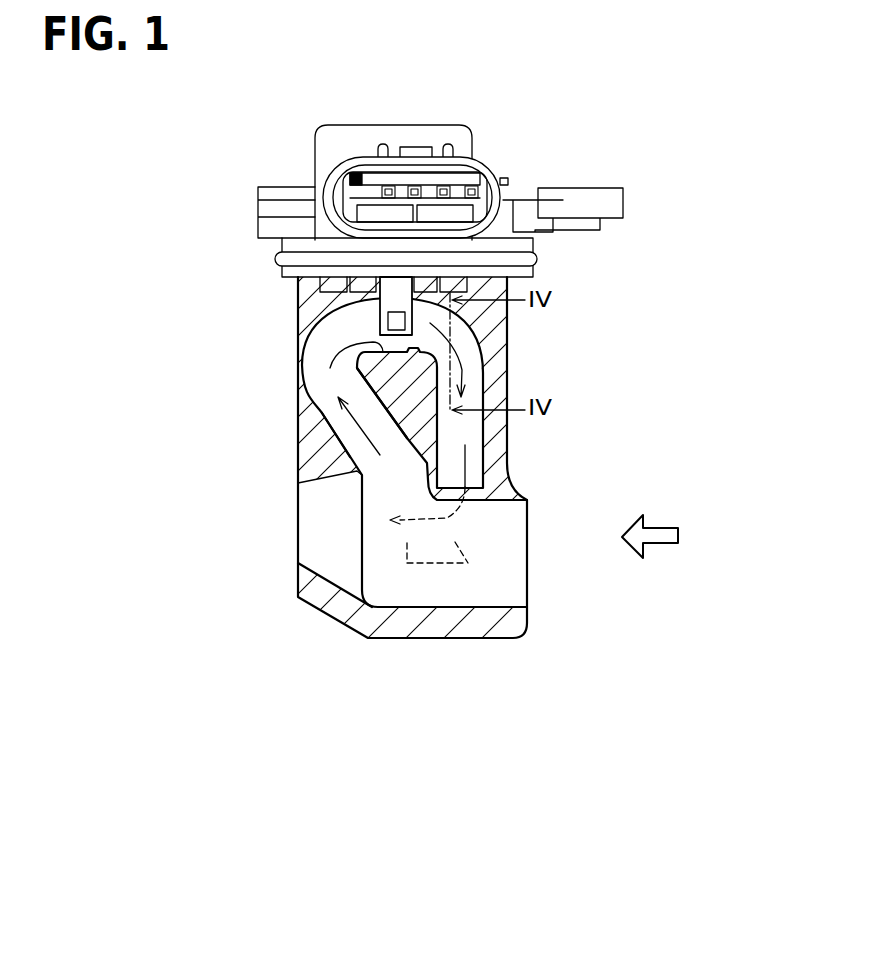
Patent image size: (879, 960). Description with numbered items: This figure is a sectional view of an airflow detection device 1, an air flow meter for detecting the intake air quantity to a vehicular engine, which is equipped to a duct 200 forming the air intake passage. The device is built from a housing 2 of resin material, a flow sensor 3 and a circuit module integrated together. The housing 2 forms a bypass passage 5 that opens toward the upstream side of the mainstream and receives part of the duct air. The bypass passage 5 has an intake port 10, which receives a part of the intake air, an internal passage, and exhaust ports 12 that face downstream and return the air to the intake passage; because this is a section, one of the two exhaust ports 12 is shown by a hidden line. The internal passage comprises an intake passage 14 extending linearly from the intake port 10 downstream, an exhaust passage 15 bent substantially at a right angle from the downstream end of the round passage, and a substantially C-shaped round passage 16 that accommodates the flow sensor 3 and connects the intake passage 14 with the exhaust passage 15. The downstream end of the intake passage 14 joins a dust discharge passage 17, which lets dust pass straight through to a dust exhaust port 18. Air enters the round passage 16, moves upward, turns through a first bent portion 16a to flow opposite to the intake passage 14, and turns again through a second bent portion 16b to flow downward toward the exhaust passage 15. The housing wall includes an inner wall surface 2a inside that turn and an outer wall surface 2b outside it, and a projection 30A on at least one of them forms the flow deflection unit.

The airflow detection device 1 is at (621, 100).
The housing 2 is at (502, 353).
The inner wall surface 2a is at (312, 396).
The outer wall surface 2b is at (368, 292).
The flow sensor 3 is at (425, 292).
The bypass passage 5 is at (318, 418).
The intake port 10 is at (527, 577).
The exhaust ports 12 is at (407, 545).
The intake passage 14 is at (507, 528).
The exhaust passage 15 is at (480, 500).
The round passage 16 is at (357, 458).
The first bent portion 16a is at (322, 347).
The second bent portion 16b is at (463, 327).
The dust discharge passage 17 is at (345, 548).
The dust exhaust port 18 is at (298, 530).
The projection 30A is at (462, 377).
The duct 200 is at (682, 639).